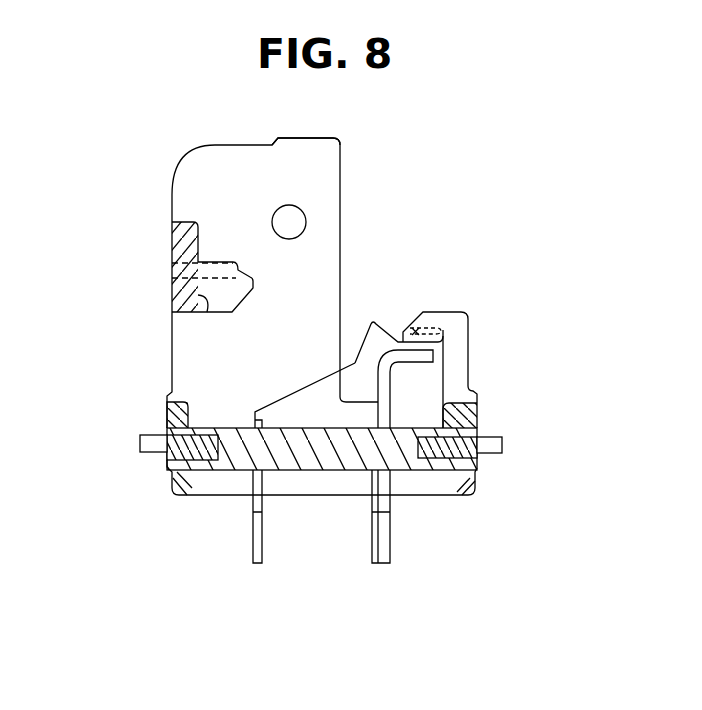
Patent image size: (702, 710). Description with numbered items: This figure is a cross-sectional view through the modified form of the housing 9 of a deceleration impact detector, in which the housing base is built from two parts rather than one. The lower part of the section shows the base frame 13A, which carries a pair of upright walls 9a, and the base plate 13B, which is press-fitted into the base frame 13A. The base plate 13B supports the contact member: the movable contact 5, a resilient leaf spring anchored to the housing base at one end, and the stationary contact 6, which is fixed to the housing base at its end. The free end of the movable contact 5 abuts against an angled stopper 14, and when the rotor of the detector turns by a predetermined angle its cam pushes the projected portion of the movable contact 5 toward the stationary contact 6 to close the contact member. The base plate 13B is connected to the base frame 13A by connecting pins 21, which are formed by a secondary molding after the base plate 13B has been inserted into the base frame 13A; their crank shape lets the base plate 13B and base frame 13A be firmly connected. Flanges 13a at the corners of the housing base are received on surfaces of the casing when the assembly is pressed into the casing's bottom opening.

The housing 9 is at (159, 342).
The upright walls 9a is at (328, 158).
The movable contact 5 is at (379, 323).
The angled stopper 14 is at (420, 334).
The stationary contact 6 is at (385, 375).
The base frame 13A is at (167, 421).
The flanges 13a is at (500, 442).
The base plate 13B is at (320, 463).
The connecting pins 21 is at (472, 450).